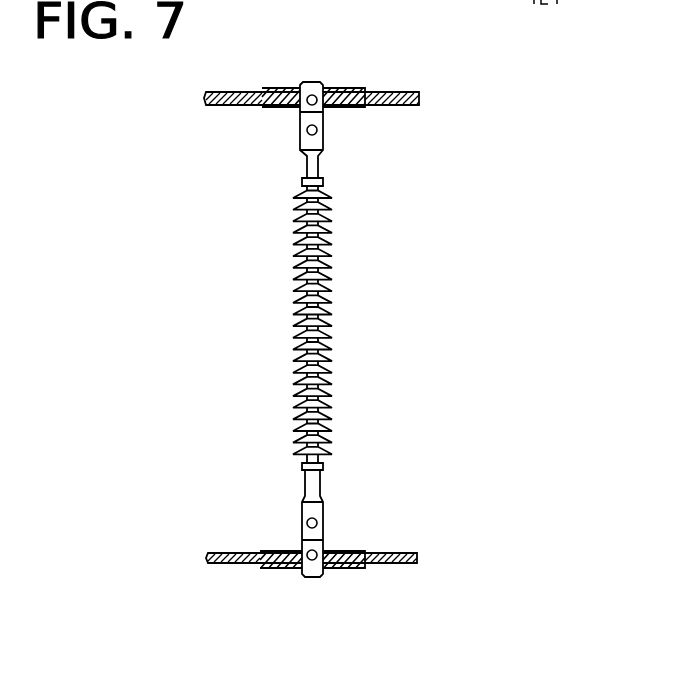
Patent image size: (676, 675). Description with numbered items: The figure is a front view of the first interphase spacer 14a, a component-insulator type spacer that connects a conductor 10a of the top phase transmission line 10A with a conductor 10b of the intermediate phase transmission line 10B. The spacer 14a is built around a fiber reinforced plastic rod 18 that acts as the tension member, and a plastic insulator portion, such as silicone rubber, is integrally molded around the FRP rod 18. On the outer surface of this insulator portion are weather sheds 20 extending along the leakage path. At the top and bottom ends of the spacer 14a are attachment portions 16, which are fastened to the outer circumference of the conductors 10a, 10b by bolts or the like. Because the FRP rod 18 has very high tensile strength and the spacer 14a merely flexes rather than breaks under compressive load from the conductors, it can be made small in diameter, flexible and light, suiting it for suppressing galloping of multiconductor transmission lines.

The top phase transmission line 10A is at (427, 94).
The conductor 10a is at (390, 89).
The intermediate phase transmission line 10B is at (427, 560).
The conductor 10b is at (393, 565).
The attachment portion 16 is at (323, 137).
The FRP rod 18 is at (330, 247).
The weather sheds 20 is at (325, 288).
The first interphase spacer 14a is at (373, 324).